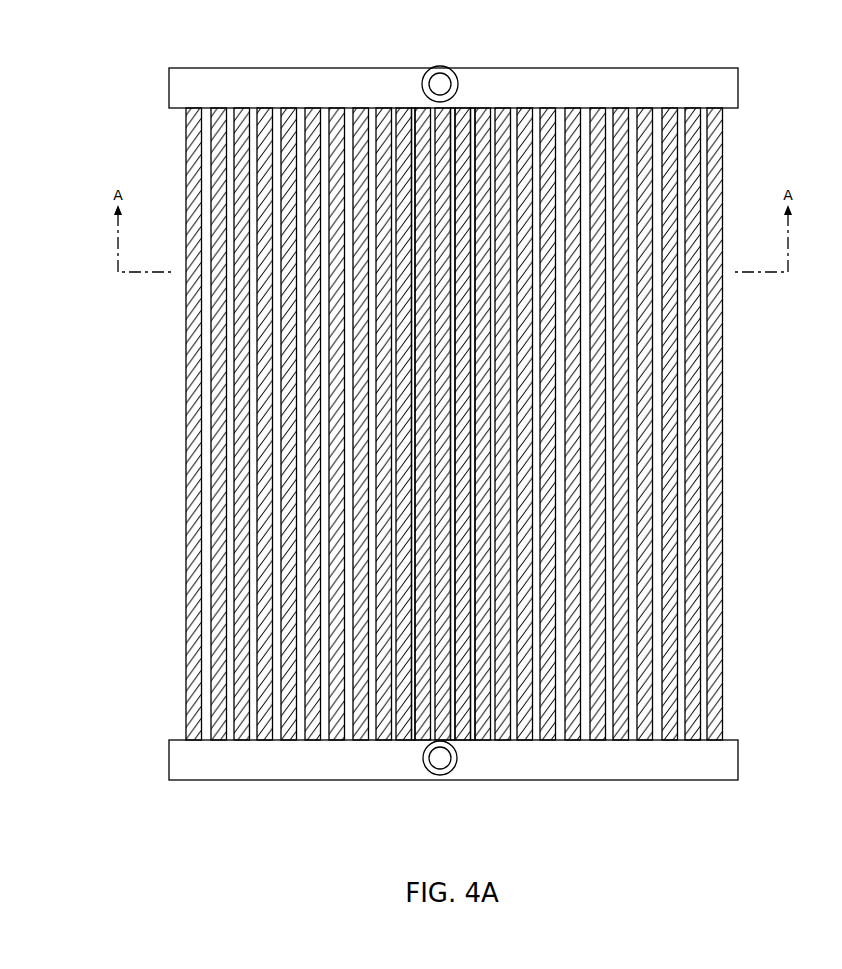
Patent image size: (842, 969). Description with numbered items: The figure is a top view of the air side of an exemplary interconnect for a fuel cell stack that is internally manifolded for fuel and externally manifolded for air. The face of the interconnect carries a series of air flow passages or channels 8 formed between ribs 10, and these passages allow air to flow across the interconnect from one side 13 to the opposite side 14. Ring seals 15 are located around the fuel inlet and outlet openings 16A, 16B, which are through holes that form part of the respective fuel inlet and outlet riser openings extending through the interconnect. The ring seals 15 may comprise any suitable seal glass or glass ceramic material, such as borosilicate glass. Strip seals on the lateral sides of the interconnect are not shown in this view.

The air flow passages 8 is at (296, 340).
The ribs 10 is at (418, 551).
The one side 13 is at (738, 755).
The opposite side 14 is at (738, 90).
The ring seals 15 is at (425, 69).
The fuel inlet opening 16A is at (444, 78).
The fuel outlet opening 16B is at (443, 766).